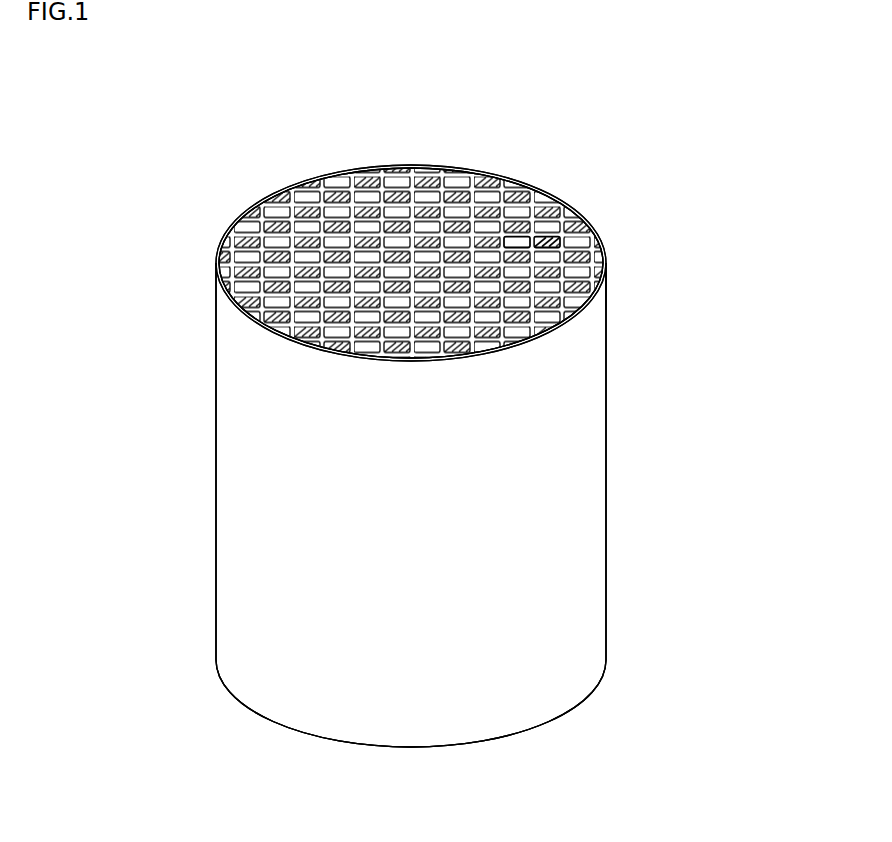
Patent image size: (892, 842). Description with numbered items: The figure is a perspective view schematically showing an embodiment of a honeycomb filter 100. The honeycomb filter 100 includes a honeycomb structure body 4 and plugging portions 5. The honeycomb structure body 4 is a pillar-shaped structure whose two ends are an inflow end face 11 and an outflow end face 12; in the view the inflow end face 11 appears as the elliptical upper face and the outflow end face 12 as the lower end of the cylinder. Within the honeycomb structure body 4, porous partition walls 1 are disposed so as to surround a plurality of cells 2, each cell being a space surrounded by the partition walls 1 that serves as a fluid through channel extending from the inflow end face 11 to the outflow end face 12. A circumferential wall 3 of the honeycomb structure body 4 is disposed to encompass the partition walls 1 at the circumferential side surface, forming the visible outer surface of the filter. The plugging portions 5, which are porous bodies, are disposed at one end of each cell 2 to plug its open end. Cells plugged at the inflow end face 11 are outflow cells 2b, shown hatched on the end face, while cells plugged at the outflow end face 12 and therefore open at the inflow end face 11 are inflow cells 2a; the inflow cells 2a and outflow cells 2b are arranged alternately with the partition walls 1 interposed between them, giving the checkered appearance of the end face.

The honeycomb filter 100 is at (742, 91).
The partition walls 1 is at (522, 190).
The cells 2 is at (411, 263).
The inflow cells 2a is at (515, 242).
The outflow cells 2b is at (560, 240).
The circumferential wall 3 is at (573, 400).
The honeycomb structure body 4 is at (623, 294).
The plugging portions 5 is at (473, 175).
The inflow end face 11 is at (288, 174).
The outflow end face 12 is at (247, 711).